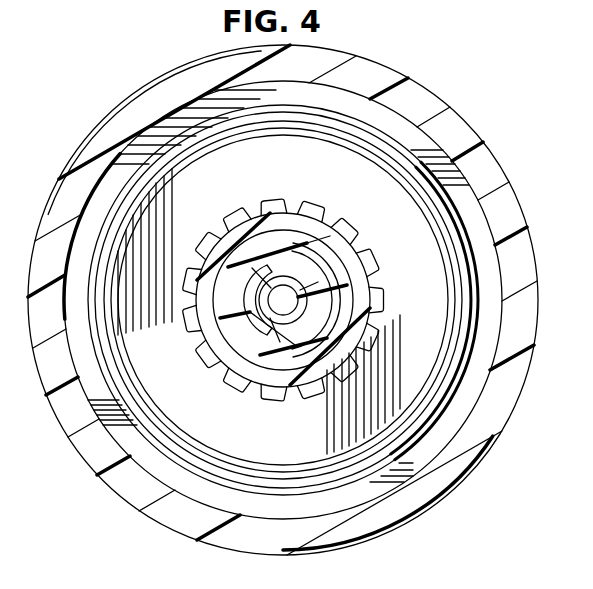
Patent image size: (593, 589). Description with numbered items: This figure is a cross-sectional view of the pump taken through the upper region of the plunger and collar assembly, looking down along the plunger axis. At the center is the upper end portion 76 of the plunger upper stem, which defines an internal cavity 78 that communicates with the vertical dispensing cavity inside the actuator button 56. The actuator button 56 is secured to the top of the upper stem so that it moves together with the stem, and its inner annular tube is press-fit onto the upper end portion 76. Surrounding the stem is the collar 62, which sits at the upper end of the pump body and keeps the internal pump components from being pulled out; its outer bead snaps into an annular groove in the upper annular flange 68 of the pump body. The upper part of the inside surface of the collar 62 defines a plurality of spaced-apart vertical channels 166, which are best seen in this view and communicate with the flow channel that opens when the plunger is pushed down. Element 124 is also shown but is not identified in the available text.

The actuator button 56 is at (483, 173).
The collar 62 is at (452, 266).
The upper annular flange 68 is at (500, 303).
The upper end portion 76 is at (315, 283).
The internal cavity 78 is at (370, 352).
The gear hub 124 is at (394, 307).
The vertical channels 166 is at (365, 232).